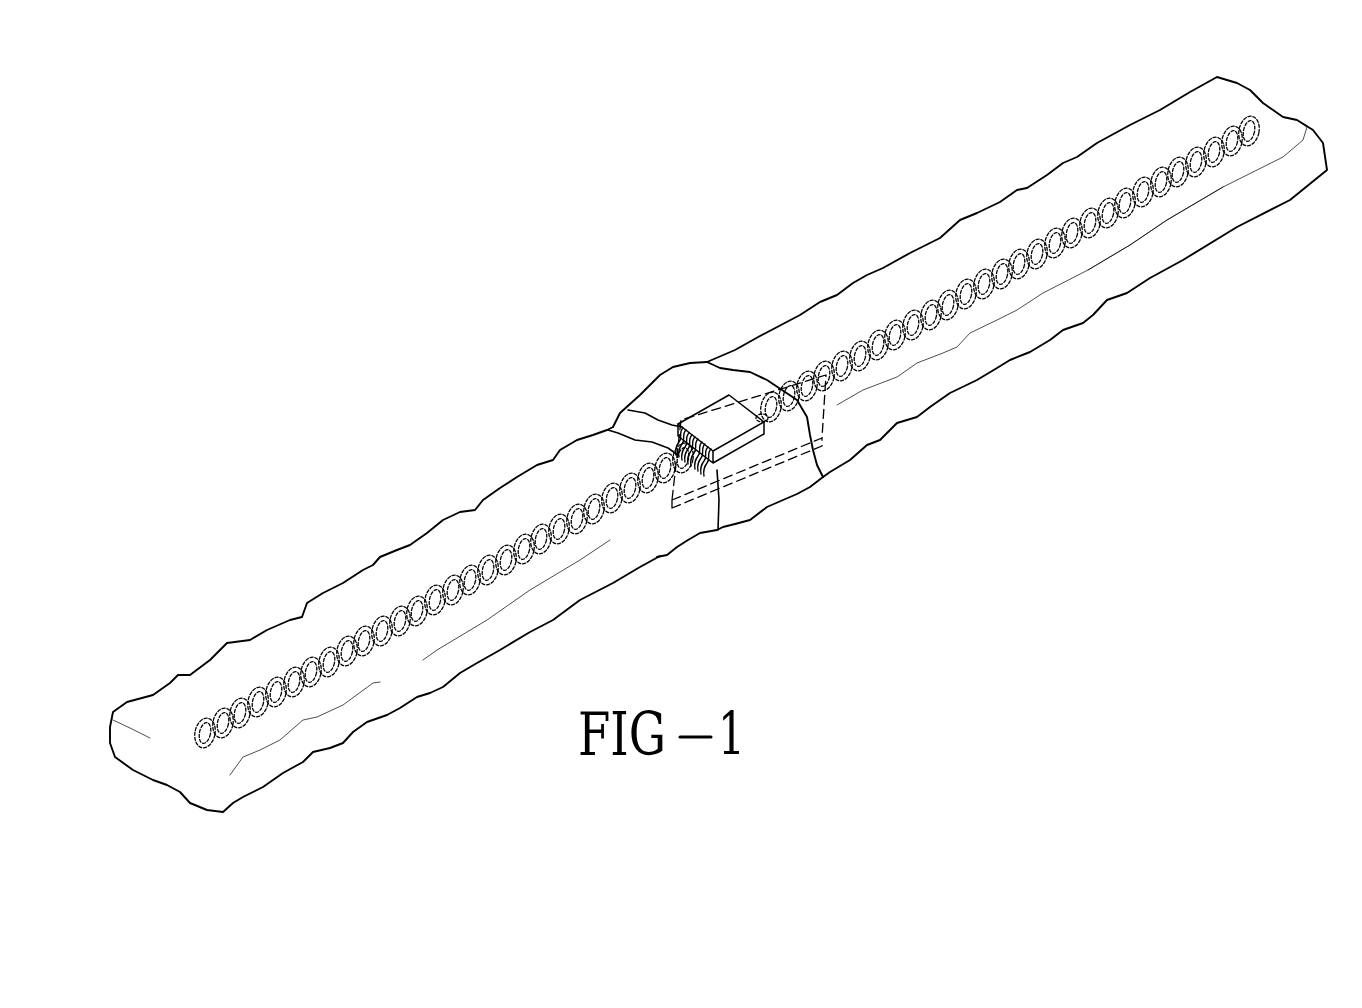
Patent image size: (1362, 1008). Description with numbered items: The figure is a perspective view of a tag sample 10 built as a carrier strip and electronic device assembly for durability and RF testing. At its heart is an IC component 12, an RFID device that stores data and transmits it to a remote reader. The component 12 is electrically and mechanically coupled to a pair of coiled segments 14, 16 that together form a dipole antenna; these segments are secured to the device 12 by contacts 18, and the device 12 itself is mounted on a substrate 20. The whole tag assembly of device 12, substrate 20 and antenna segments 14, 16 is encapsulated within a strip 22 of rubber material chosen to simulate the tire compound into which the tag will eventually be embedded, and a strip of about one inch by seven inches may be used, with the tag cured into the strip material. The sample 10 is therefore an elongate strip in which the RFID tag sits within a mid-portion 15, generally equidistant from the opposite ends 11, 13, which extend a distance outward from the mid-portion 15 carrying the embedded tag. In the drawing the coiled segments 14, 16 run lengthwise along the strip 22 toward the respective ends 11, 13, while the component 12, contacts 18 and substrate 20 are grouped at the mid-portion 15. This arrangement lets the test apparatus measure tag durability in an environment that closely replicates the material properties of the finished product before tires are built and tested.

The tag sample 10 is at (457, 271).
The strip end 11 is at (1223, 102).
The IC component 12 is at (727, 407).
The strip end 13 is at (170, 772).
The coiled antenna segment 14 is at (1059, 225).
The mid-portion 15 is at (628, 410).
The coiled antenna segment 16 is at (378, 622).
The contacts 18 is at (735, 479).
The substrate 20 is at (764, 458).
The strip 22 is at (1130, 262).